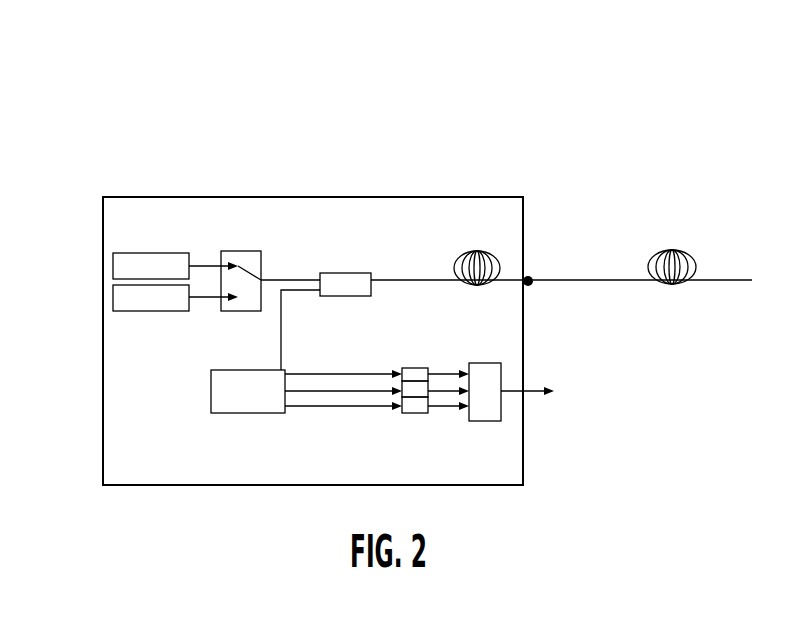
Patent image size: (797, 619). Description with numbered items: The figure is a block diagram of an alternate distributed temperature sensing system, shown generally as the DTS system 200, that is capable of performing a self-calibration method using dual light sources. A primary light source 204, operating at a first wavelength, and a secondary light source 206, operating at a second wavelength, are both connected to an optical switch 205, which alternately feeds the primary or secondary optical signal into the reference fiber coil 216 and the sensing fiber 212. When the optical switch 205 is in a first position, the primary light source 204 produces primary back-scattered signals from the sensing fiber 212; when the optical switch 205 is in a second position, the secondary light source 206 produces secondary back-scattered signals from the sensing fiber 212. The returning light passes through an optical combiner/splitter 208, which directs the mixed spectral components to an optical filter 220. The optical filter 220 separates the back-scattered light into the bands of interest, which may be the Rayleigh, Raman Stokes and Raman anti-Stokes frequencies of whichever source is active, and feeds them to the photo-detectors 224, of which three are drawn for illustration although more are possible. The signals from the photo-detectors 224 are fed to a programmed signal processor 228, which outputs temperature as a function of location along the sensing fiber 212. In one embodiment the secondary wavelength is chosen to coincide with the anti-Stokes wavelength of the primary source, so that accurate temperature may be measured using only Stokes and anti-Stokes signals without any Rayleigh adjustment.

The DTS system 200 is at (185, 86).
The primary light source 204 is at (125, 262).
The secondary light source 206 is at (125, 298).
The optical switch 205 is at (254, 252).
The optical combiner/splitter 208 is at (345, 279).
The reference fiber coil 216 is at (478, 255).
The sensing fiber 212 is at (672, 252).
The optical filter 220 is at (222, 395).
The photo-detectors 224 is at (417, 405).
The programmed signal processor 228 is at (487, 405).